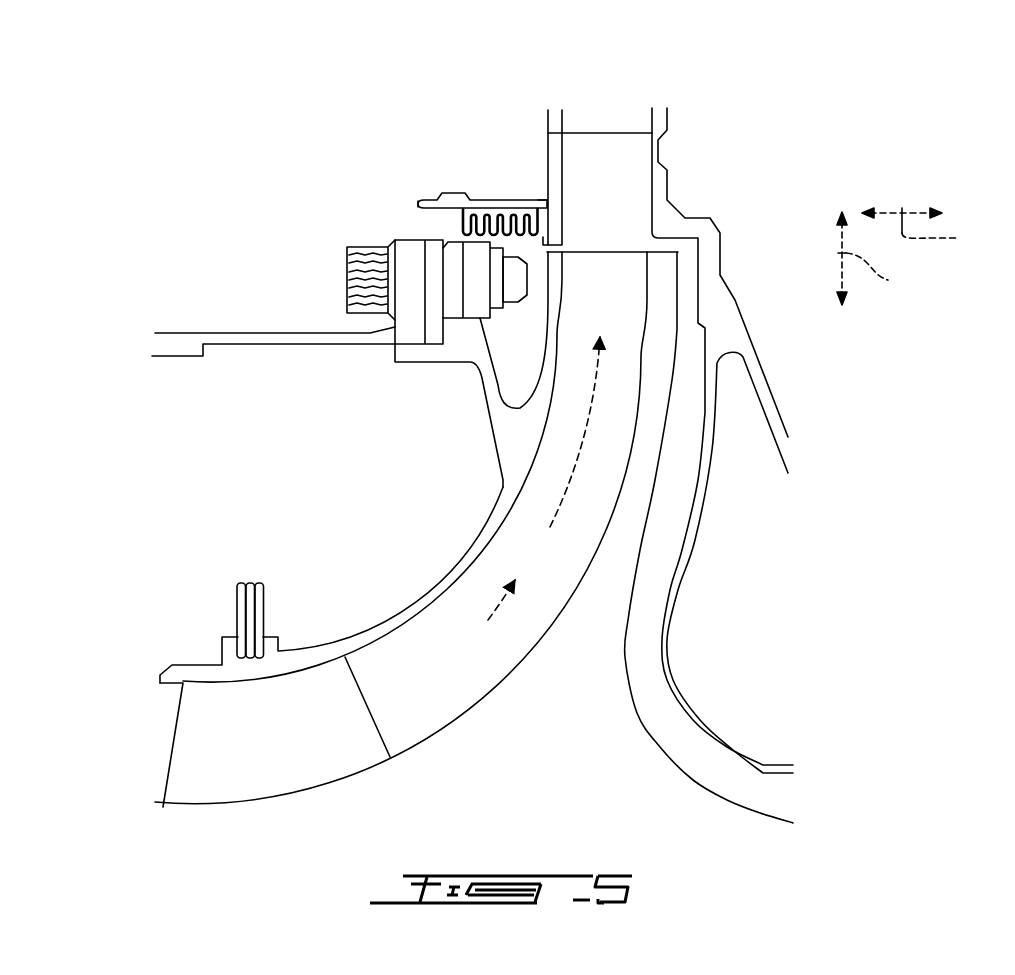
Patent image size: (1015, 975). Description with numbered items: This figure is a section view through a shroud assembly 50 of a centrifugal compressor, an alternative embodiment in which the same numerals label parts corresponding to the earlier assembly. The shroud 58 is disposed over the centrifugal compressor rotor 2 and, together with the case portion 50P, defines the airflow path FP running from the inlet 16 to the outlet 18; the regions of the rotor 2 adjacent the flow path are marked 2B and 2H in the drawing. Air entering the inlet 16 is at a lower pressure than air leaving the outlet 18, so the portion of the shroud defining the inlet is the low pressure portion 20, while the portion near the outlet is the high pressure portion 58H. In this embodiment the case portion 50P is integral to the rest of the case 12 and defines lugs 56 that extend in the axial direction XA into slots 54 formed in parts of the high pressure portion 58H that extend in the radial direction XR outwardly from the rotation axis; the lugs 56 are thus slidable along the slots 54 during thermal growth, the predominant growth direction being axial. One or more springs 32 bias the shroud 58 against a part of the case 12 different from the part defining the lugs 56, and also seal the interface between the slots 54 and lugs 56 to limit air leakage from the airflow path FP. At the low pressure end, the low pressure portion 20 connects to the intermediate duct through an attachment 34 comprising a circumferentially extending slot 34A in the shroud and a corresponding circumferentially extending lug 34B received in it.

The centrifugal compressor rotor 2 is at (740, 679).
The case 12 is at (555, 119).
The inlet 16 is at (170, 694).
The outlet 18 is at (636, 221).
The low pressure portion 20 is at (203, 673).
The springs 32 is at (510, 225).
The attachment 34 is at (217, 552).
The circumferentially extending slot 34A is at (262, 653).
The circumferentially extending lug 34B is at (240, 586).
The shroud assembly 50 is at (321, 251).
The case portion 50P is at (527, 203).
The slots 54 is at (450, 200).
The lugs 56 is at (420, 203).
The shroud 58 is at (414, 612).
The high pressure portion 58H is at (555, 272).
The airflow path FP is at (546, 563).
The blade region 2B is at (442, 687).
The hub region 2H is at (585, 717).
The axial direction XA is at (929, 231).
The radial direction XR is at (882, 258).